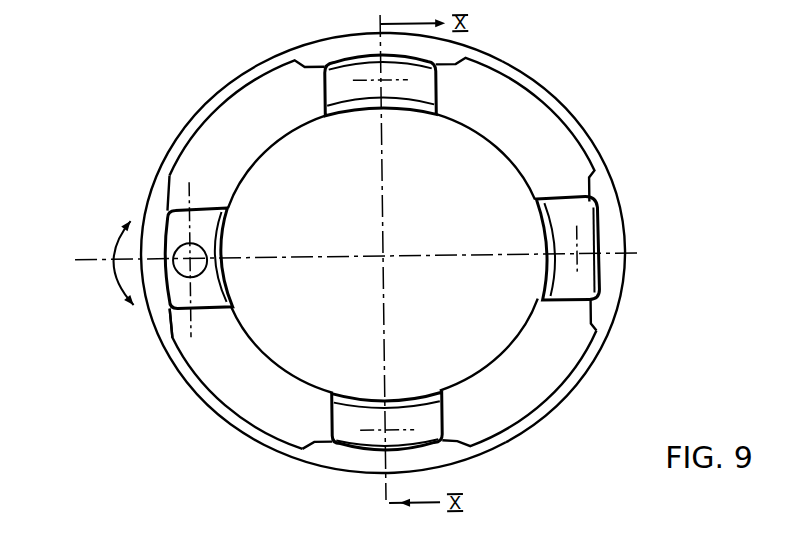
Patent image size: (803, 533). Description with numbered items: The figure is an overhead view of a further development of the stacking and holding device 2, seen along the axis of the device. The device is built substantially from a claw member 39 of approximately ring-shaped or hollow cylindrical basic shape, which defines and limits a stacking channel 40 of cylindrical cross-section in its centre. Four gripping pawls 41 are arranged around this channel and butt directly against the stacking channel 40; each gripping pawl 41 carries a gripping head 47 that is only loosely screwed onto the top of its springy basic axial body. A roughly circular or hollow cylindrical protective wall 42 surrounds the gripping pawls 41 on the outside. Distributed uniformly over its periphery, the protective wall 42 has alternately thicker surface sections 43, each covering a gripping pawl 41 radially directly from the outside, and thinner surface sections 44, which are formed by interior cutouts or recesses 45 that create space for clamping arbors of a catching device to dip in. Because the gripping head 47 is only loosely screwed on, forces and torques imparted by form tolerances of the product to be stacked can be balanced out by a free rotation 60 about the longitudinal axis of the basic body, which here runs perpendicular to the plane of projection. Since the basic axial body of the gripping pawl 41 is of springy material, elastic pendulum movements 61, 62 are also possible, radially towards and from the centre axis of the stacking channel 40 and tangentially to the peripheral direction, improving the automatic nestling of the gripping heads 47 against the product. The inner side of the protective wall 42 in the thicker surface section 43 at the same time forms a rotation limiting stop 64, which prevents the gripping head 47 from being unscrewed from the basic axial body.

The stacking and holding device 2 is at (188, 101).
The claw member 39 is at (271, 362).
The stacking channel 40 is at (444, 302).
The gripping pawl 41 is at (364, 118).
The protective wall 42 is at (593, 177).
The thicker surface section 43 is at (308, 47).
The thinner surface section 44 is at (538, 87).
The recess 45 is at (547, 108).
The gripping head 47 is at (589, 231).
The free rotation 60 is at (117, 236).
The radial pendulum movement 61 is at (100, 258).
The tangential pendulum movement 62 is at (190, 200).
The rotation limiting stop 64 is at (598, 265).